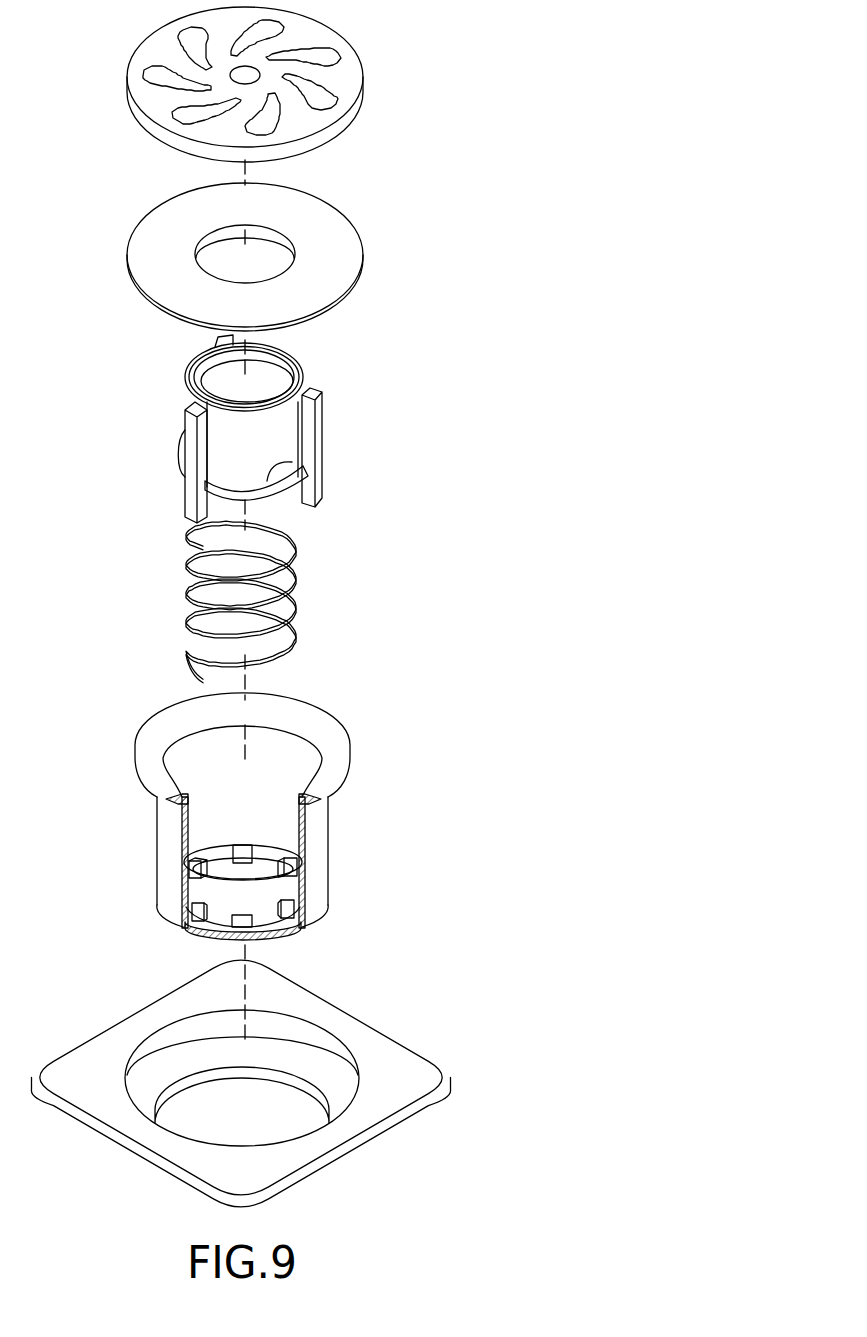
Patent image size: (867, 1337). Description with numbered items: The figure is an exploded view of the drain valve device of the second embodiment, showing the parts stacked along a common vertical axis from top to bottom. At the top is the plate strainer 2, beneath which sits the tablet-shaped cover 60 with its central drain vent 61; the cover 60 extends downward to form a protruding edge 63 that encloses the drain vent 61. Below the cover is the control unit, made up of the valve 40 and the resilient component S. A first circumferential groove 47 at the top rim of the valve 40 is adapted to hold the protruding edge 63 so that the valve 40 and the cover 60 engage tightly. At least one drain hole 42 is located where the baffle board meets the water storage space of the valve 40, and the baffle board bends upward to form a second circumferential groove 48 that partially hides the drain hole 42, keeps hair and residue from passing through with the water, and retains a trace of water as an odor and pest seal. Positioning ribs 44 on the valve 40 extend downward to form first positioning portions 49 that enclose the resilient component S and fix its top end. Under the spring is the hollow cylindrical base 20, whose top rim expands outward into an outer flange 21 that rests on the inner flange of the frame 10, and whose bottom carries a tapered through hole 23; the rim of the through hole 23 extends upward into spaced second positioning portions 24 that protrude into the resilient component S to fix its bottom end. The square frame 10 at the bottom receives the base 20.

The plate strainer 2 is at (345, 78).
The cover 60 is at (252, 257).
The drain vent 61 is at (285, 238).
The protruding edge 63 is at (210, 242).
The valve 40 is at (250, 419).
The first circumferential groove 47 is at (298, 373).
The positioning rib 44 is at (318, 412).
The drain hole 42 is at (268, 483).
The second circumferential groove 48 is at (287, 483).
The first positioning portion 49 is at (188, 502).
The resilient component S is at (297, 605).
The base 20 is at (304, 833).
The outer flange 21 is at (325, 744).
The second positioning portion 24 is at (293, 907).
The through hole 23 is at (270, 928).
The frame 10 is at (398, 1085).